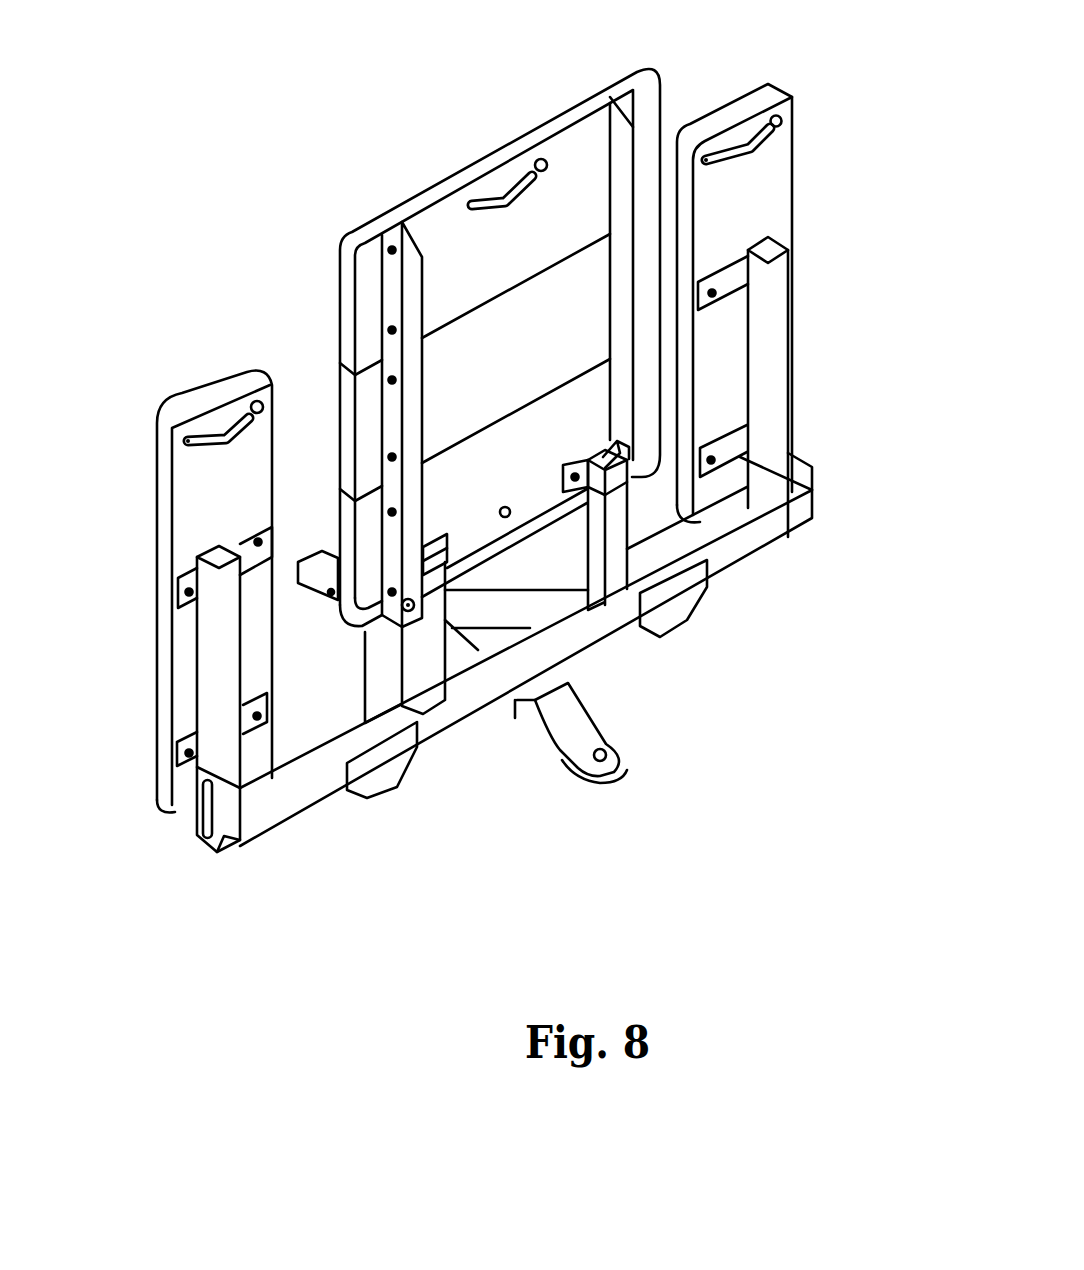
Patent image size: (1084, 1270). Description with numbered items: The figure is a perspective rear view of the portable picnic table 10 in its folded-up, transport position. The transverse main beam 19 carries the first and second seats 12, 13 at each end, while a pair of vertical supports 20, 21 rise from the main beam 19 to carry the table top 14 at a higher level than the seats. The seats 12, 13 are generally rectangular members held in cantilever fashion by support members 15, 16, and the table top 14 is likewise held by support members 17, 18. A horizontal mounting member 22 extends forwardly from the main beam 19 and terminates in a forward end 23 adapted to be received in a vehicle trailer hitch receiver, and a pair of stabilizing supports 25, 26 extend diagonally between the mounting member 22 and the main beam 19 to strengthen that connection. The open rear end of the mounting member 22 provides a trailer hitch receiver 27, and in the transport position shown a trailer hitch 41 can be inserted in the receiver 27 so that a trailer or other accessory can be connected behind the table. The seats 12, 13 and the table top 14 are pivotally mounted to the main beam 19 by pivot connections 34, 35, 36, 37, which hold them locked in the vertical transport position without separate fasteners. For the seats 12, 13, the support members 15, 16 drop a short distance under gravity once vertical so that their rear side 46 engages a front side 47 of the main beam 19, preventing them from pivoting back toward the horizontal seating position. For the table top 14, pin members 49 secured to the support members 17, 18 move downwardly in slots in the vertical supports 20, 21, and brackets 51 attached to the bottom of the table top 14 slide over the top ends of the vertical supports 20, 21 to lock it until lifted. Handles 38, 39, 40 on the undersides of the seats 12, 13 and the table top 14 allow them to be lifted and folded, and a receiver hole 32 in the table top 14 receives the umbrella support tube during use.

The portable picnic table 10 is at (380, 890).
The first seat 12 is at (742, 92).
The second seat 13 is at (210, 392).
The table top 14 is at (510, 137).
The support member 15 is at (772, 308).
The support member 16 is at (217, 641).
The support member 17 is at (620, 197).
The support member 18 is at (415, 303).
The transverse main beam 19 is at (310, 787).
The vertical support 20 is at (627, 545).
The vertical support 21 is at (427, 680).
The horizontal mounting member 22 is at (468, 652).
The forward end 23 is at (320, 560).
The stabilizing support 25 is at (497, 603).
The stabilizing support 26 is at (370, 667).
The trailer hitch receiver 27 is at (518, 720).
The receiver hole 32 is at (508, 507).
The pivot connection 34 is at (795, 460).
The pivot connection 35 is at (204, 812).
The pivot connection 36 is at (600, 450).
The pivot connection 37 is at (447, 553).
The handle 38 is at (757, 160).
The handle 39 is at (222, 449).
The handle 40 is at (510, 193).
The trailer hitch 41 is at (580, 727).
The rear side 46 is at (327, 780).
The front side 47 is at (232, 748).
The pin member 49 is at (400, 609).
The bracket 51 is at (450, 563).